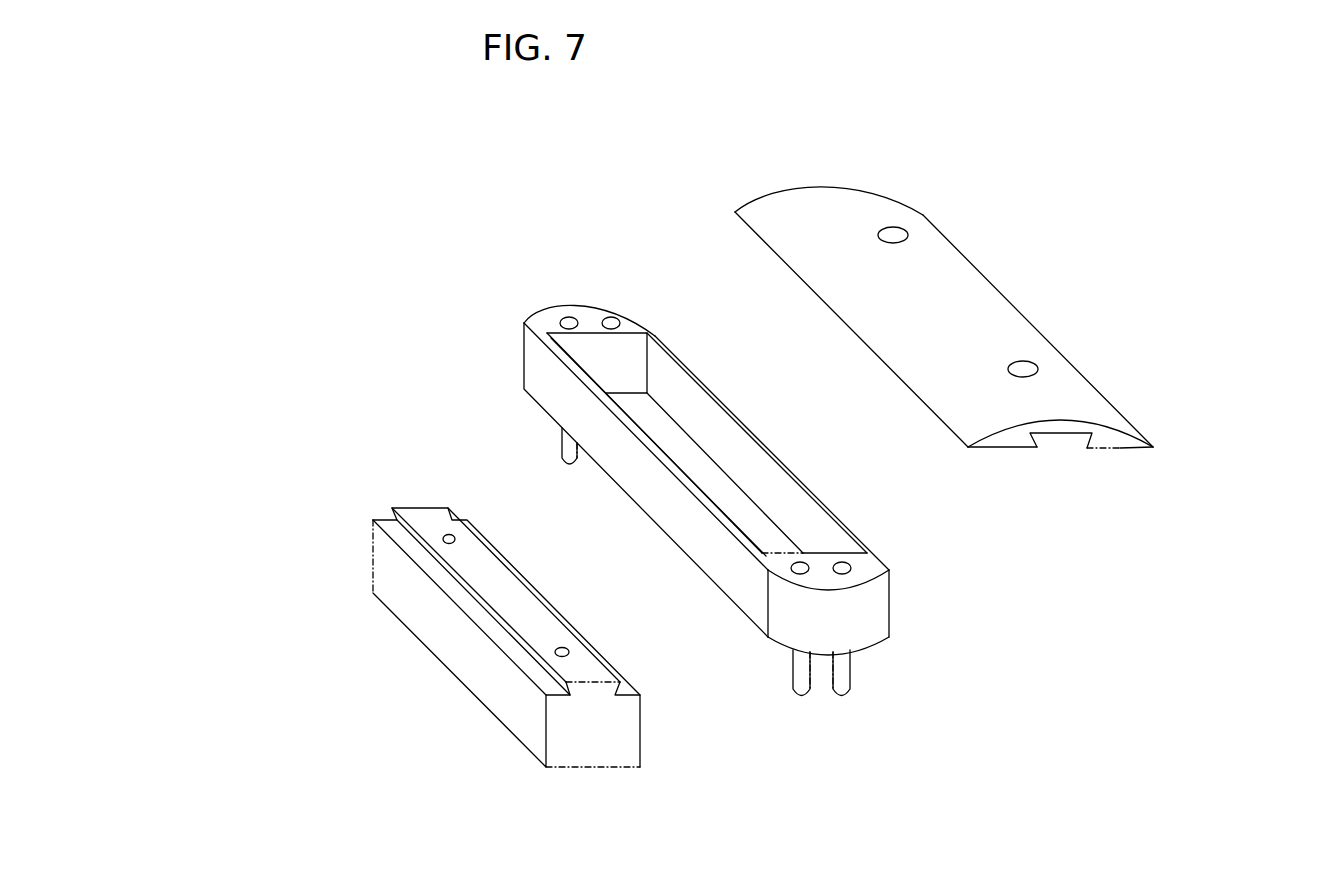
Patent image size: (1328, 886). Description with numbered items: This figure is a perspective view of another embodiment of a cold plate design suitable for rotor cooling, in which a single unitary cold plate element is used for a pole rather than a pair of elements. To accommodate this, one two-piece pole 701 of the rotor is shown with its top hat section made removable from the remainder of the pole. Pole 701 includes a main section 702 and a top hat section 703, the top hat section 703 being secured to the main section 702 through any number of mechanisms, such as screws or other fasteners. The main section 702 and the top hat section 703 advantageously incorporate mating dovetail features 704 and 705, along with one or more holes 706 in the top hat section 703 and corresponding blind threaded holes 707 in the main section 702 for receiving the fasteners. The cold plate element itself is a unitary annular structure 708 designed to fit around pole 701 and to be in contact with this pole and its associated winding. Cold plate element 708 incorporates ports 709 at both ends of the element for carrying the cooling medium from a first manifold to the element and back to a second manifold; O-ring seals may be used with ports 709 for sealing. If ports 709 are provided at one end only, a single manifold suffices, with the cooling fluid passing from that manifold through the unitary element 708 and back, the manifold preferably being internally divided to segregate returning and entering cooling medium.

The two-piece pole 701 is at (1122, 449).
The main section 702 is at (477, 697).
The top hat section 703 is at (1000, 288).
The dovetail feature 704 is at (373, 553).
The dovetail feature 705 is at (1070, 435).
The holes 706 is at (1007, 370).
The blind threaded holes 707 is at (457, 540).
The unitary annular structure 708 is at (524, 352).
The ports 709 is at (562, 457).